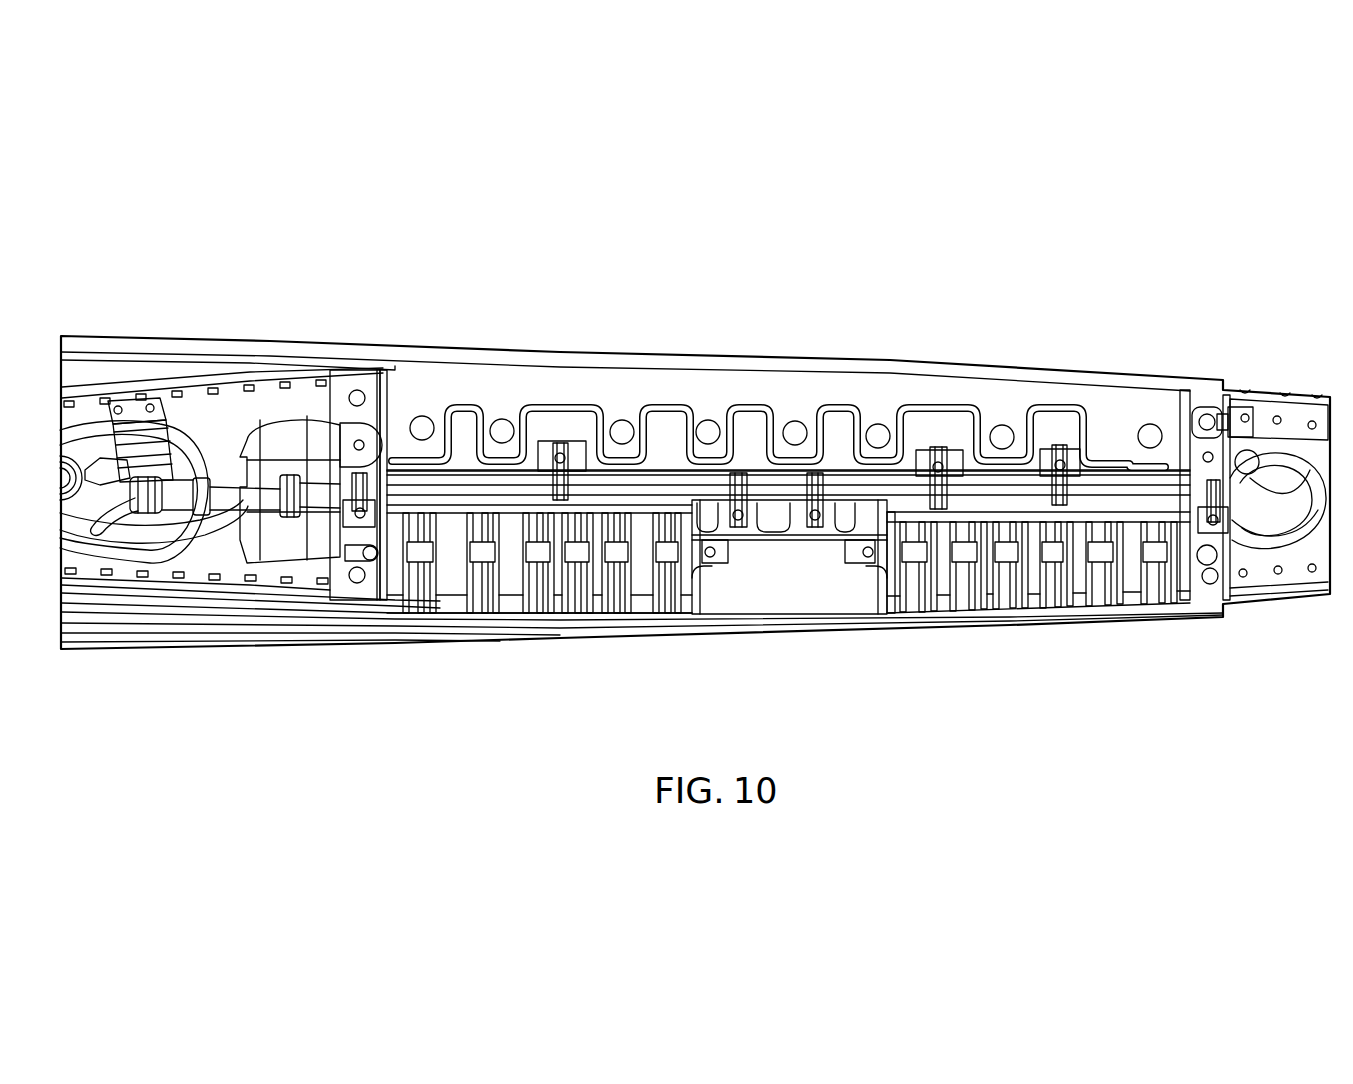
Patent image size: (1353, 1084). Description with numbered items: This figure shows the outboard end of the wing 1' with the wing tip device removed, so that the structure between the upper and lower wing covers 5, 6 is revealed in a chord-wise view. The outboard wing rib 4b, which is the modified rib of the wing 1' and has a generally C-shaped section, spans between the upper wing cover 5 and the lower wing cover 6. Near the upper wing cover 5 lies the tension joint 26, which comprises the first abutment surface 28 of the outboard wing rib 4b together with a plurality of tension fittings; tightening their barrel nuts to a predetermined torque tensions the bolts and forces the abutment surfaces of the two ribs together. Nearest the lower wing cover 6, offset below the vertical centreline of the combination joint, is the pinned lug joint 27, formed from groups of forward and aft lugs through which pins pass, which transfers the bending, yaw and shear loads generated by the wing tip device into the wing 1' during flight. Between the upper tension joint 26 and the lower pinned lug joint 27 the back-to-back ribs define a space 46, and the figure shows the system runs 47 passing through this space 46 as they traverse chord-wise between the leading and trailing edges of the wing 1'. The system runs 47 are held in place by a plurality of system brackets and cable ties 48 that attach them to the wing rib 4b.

The wing 1' is at (695, 396).
The upper wing cover 5 is at (587, 315).
The lower wing cover 6 is at (558, 665).
The space 46 is at (668, 445).
The first abutment surface 28 is at (895, 404).
The tension joint 26 is at (1007, 415).
The outboard wing rib 4b is at (1147, 400).
The system runs 47 is at (452, 500).
The pinned lug joint 27 is at (613, 553).
The system brackets and cable ties 48 is at (360, 530).